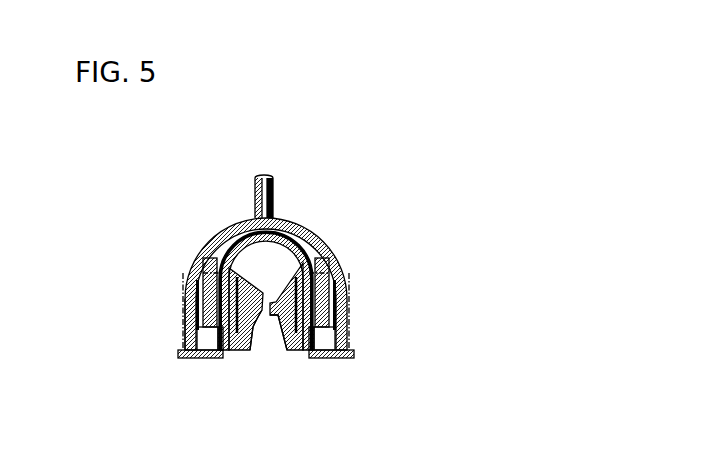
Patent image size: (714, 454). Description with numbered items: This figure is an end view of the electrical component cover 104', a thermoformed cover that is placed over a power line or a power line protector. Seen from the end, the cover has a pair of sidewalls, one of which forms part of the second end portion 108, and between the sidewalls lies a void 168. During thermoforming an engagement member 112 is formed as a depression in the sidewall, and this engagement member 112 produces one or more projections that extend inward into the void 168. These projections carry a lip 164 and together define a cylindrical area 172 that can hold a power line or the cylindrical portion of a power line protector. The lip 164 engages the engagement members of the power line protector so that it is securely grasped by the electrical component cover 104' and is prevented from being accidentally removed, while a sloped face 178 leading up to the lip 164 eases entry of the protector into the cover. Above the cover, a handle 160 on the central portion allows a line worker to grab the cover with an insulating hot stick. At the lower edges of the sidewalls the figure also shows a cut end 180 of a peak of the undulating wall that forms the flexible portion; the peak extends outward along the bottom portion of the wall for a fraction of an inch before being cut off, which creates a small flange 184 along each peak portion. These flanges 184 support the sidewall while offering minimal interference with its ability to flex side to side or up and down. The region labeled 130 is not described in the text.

The electrical component cover 104' is at (241, 259).
The second end portion 108 is at (236, 249).
The engagement member 112 is at (205, 298).
The foot flange 130 is at (184, 351).
The handle 160 is at (274, 194).
The lip 164 is at (263, 292).
The void 168 is at (259, 334).
The cylindrical area 172 is at (268, 257).
The sloped face 178 is at (255, 334).
The cut end 180 is at (185, 345).
The flange 184 is at (198, 325).